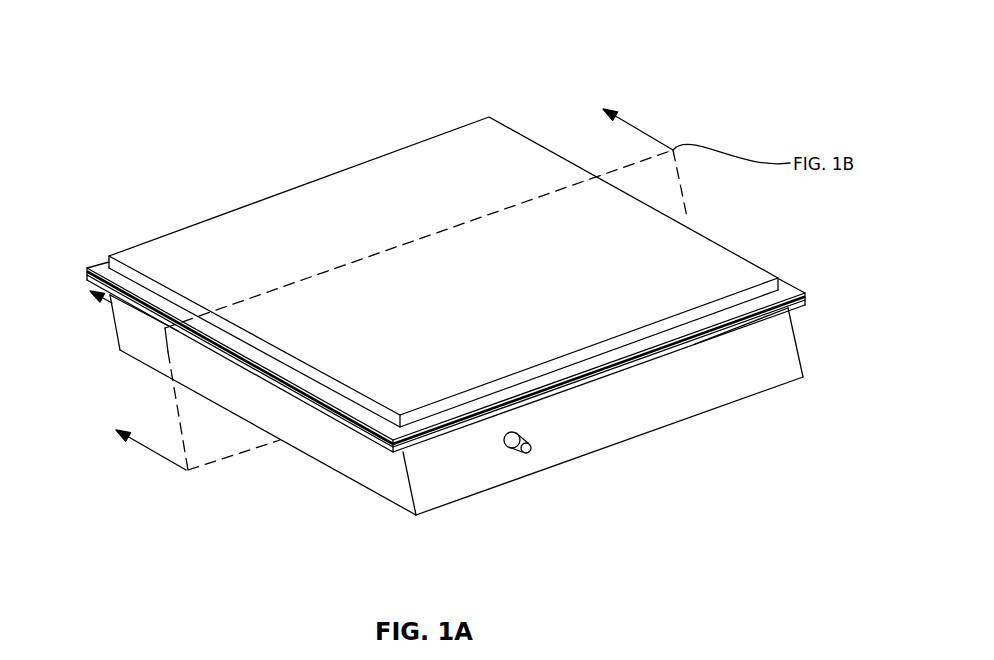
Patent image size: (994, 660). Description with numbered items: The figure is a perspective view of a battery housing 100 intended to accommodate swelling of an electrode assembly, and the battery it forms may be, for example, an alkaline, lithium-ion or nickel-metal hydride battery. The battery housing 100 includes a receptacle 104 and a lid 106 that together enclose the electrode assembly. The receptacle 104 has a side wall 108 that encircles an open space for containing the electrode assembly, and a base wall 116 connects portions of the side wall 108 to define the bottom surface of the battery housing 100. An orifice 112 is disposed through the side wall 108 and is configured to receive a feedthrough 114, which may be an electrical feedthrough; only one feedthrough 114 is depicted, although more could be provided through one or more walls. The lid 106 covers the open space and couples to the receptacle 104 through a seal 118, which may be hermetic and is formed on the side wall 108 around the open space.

The battery housing 100 is at (491, 331).
The receptacle 104 is at (456, 434).
The lid 106 is at (413, 378).
The side wall 108 is at (603, 437).
The orifice 112 is at (518, 430).
The feedthrough 114 is at (537, 442).
The base wall 116 is at (690, 417).
The seal 118 is at (826, 293).